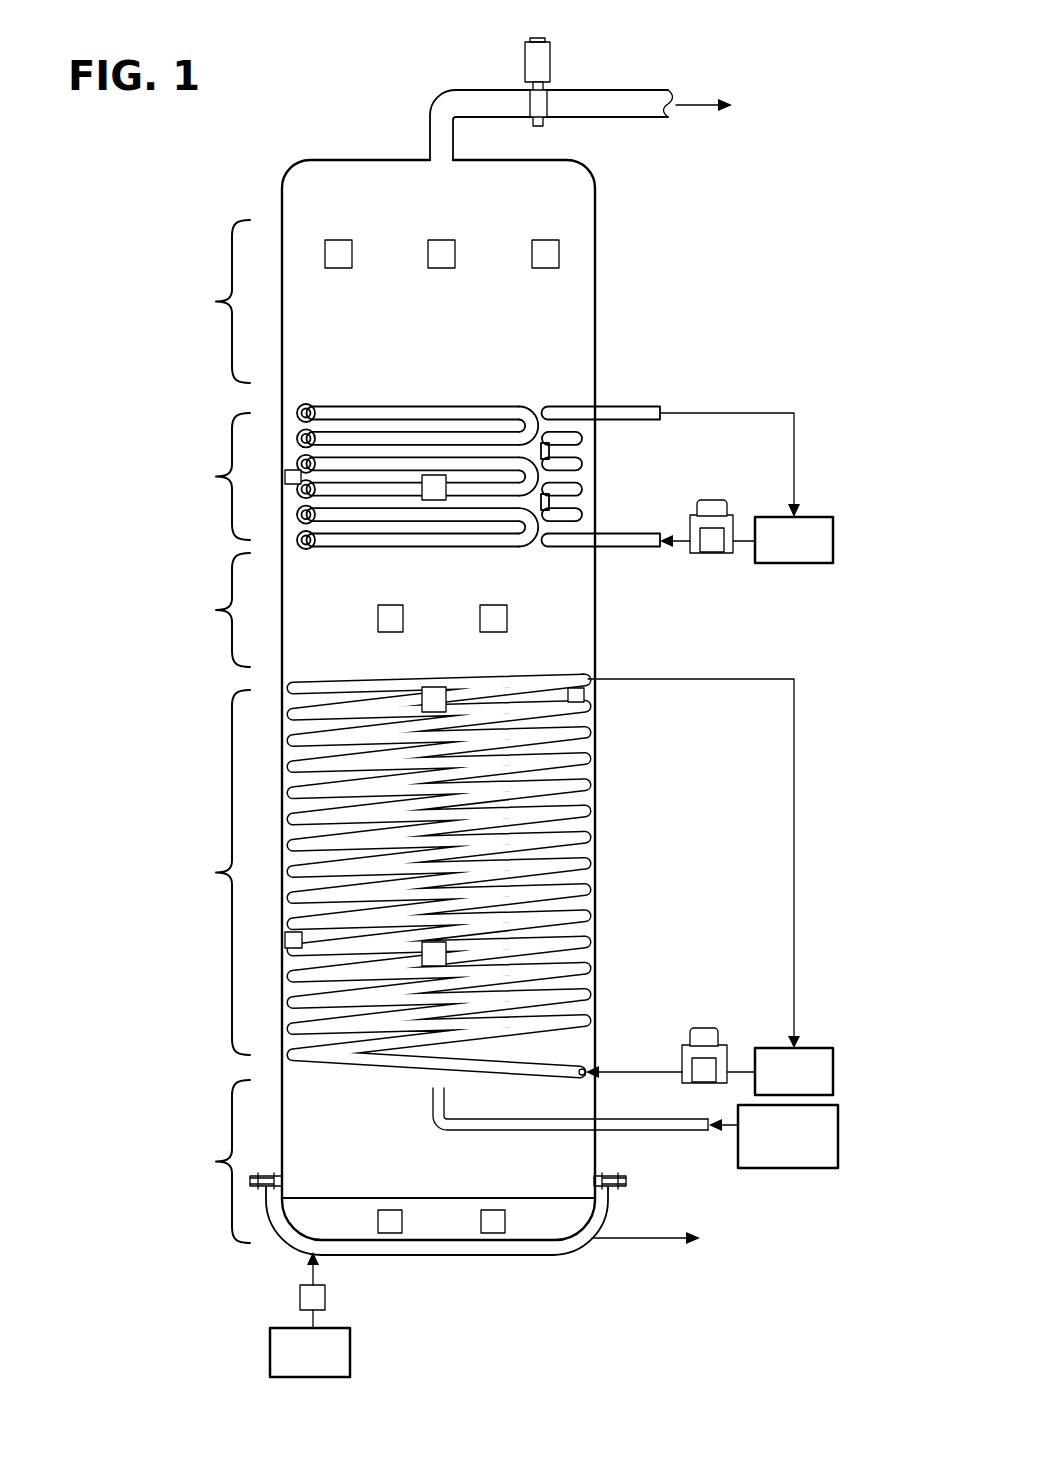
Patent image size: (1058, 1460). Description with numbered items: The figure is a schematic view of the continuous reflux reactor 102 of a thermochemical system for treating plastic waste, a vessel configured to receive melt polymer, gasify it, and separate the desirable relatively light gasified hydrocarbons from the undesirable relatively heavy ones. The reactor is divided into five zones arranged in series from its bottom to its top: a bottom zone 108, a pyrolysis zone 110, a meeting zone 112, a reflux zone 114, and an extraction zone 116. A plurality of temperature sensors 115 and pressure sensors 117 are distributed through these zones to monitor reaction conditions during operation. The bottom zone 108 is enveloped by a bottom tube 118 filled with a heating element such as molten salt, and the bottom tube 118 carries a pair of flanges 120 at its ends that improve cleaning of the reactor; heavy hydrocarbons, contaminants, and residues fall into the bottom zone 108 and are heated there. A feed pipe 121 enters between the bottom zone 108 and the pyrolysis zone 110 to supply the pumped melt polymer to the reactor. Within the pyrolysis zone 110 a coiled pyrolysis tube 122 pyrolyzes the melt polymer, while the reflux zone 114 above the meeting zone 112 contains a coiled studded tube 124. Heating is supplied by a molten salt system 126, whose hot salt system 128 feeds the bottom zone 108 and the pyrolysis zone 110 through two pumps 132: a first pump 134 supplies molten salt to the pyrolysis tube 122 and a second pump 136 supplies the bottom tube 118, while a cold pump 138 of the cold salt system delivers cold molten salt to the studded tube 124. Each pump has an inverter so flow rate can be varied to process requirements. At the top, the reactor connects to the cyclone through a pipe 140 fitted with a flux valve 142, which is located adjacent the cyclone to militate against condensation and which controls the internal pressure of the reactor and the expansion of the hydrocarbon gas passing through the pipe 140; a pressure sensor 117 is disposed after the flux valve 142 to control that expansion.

The continuous reflux reactor 102 is at (606, 58).
The bottom zone 108 is at (210, 1161).
The pyrolysis zone 110 is at (378, 877).
The meeting zone 112 is at (210, 610).
The reflux zone 114 is at (376, 476).
The temperature sensor 115 is at (441, 268).
The extraction zone 116 is at (210, 301).
The pressure sensor 117 is at (338, 268).
The bottom tube 118 is at (588, 1260).
The flange 120 is at (267, 1173).
The feed pipe 121 is at (690, 1136).
The pyrolysis tube 122 is at (594, 1046).
The studded tube 124 is at (646, 405).
The molten salt system 126 is at (574, 909).
The hot salt system 128 is at (551, 1212).
The pump 132 is at (794, 540).
The first pump 134 is at (706, 1027).
The second pump 136 is at (300, 1302).
The cold pump 138 is at (710, 560).
The pipe 140 is at (645, 97).
The flux valve 142 is at (538, 38).